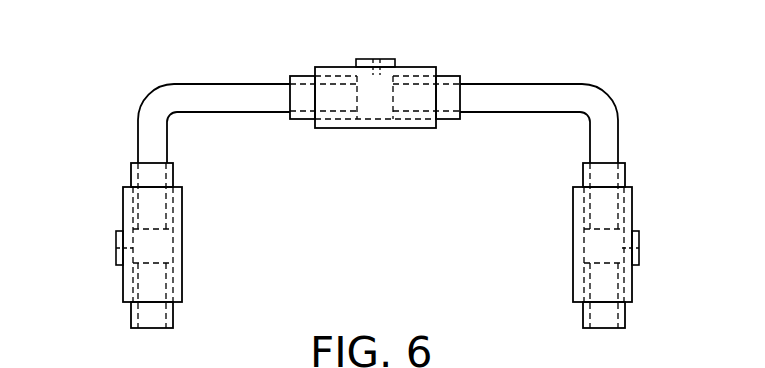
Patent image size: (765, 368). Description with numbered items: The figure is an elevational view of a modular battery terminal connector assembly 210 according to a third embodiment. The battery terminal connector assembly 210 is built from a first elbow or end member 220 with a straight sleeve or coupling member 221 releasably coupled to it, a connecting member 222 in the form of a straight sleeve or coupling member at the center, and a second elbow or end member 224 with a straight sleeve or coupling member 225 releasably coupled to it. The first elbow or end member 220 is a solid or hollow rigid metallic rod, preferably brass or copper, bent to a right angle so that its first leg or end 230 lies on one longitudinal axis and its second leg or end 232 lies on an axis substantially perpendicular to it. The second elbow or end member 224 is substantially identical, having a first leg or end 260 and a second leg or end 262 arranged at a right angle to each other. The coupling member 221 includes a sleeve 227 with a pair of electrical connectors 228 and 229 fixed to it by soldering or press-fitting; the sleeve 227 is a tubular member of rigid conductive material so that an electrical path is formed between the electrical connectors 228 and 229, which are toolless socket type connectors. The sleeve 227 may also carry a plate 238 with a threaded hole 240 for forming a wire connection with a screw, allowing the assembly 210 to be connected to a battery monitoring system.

The modular battery terminal connector assembly 210 is at (522, 64).
The first elbow or end member 220 is at (580, 79).
The straight sleeve or coupling member 221 is at (642, 194).
The connecting member 222 is at (330, 61).
The second elbow or end member 224 is at (159, 86).
The straight sleeve or coupling member 225 is at (192, 205).
The sleeve 227 is at (372, 128).
The electrical connector 228 is at (447, 120).
The electrical connector 229 is at (298, 120).
The first leg or end 230 is at (618, 132).
The second leg or end 232 is at (503, 113).
The plate 238 is at (395, 66).
The threaded hole 240 is at (376, 59).
The first leg or end 260 is at (138, 145).
The second leg or end 262 is at (220, 84).